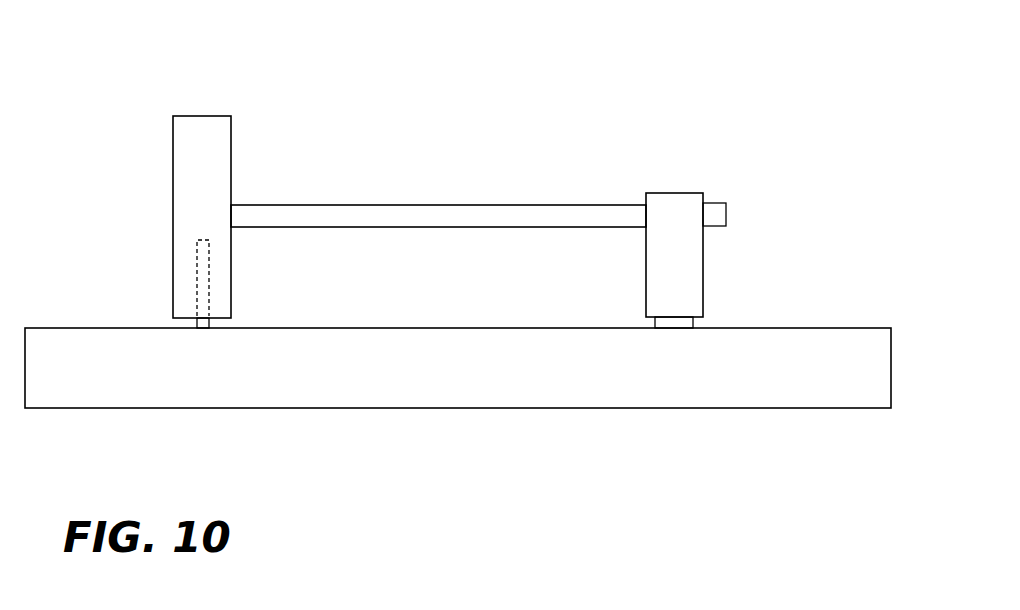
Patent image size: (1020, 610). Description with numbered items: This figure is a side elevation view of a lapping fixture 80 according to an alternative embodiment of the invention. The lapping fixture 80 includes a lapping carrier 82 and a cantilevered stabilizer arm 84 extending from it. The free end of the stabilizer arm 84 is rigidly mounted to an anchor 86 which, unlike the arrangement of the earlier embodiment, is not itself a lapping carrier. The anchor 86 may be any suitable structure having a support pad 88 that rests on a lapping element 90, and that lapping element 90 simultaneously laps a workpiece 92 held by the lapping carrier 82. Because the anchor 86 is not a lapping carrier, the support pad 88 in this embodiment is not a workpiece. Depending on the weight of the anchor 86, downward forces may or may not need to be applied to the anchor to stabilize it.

The lapping fixture 80 is at (114, 50).
The lapping carrier 82 is at (173, 135).
The cantilevered stabilizer arm 84 is at (440, 205).
The anchor 86 is at (703, 257).
The support pad 88 is at (667, 320).
The lapping element 90 is at (845, 328).
The workpiece 92 is at (197, 326).